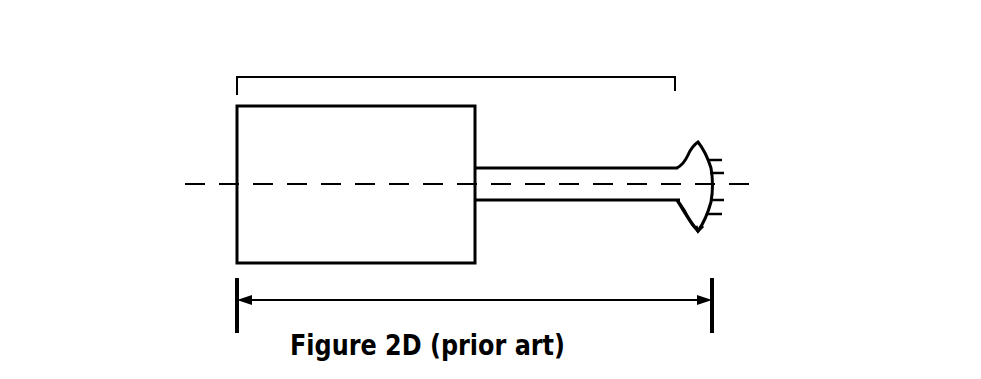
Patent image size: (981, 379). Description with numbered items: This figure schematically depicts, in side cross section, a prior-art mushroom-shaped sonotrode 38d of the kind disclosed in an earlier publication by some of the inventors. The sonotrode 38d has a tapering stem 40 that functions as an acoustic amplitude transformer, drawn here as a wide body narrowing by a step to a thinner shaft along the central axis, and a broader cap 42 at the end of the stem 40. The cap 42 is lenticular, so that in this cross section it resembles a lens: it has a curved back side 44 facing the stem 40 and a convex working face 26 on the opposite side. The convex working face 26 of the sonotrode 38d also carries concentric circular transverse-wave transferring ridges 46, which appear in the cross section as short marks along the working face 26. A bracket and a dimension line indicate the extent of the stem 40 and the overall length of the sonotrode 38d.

The mushroom-shaped sonotrode 38d is at (138, 126).
The tapering stem 40 is at (396, 77).
The cap 42 is at (710, 130).
The curved back side 44 is at (690, 222).
The concentric circular transverse-wave transferring ridges 46 is at (717, 157).
The convex working face 26 is at (704, 231).